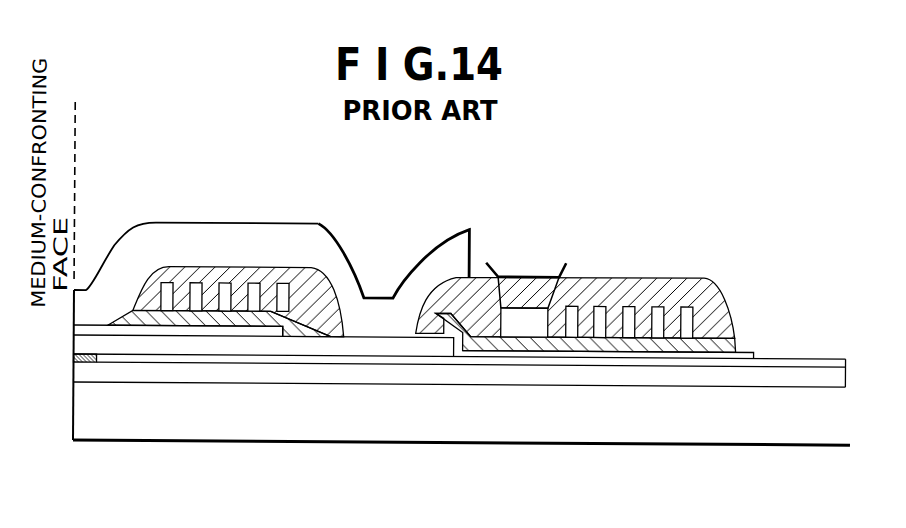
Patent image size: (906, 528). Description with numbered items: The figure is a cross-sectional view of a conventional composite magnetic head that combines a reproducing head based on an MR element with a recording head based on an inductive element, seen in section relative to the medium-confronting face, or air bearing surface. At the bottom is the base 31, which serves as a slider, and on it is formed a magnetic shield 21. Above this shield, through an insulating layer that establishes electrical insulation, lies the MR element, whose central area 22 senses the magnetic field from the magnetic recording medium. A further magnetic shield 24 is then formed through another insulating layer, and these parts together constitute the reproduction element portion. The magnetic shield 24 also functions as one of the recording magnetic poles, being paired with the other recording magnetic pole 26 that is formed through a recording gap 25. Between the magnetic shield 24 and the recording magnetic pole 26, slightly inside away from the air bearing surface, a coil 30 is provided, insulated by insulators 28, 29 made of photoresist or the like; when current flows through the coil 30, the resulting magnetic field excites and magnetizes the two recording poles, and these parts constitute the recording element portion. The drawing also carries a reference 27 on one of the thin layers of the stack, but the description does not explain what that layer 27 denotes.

The magnetic shield 21 is at (96, 373).
The central area 22 is at (82, 370).
The magnetic shield 24 is at (80, 343).
The recording gap 25 is at (80, 325).
The recording magnetic pole 26 is at (226, 234).
The gap layer 27 is at (197, 362).
The insulator 28 is at (322, 303).
The insulator 29 is at (245, 273).
The coil 30 is at (303, 278).
The base 31 is at (112, 422).